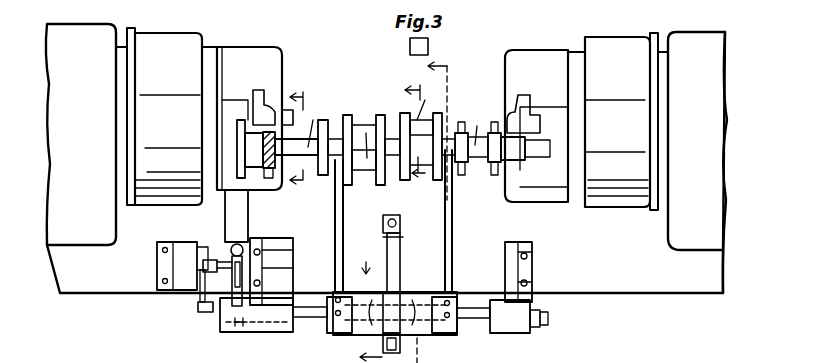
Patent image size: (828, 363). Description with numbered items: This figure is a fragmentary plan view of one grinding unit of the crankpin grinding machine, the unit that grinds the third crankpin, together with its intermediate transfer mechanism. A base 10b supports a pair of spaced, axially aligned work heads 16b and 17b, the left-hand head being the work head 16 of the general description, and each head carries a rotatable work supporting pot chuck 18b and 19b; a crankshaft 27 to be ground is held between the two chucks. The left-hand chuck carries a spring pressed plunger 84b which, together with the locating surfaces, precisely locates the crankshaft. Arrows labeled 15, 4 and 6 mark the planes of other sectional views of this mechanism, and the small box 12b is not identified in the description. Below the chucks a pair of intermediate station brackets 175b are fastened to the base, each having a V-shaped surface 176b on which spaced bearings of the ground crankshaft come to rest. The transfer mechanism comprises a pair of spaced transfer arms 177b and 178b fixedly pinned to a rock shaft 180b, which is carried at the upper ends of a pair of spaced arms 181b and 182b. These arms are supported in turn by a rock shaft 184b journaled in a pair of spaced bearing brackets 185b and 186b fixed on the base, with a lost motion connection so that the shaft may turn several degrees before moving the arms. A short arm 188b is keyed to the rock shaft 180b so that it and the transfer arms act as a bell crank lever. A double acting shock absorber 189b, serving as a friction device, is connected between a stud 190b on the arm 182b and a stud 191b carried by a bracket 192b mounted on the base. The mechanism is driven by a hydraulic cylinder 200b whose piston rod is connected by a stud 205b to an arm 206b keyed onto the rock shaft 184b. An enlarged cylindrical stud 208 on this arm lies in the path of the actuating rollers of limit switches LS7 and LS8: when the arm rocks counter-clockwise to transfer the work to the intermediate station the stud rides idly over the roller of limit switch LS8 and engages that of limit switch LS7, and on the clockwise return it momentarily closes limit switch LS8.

The base 10b is at (66, 267).
The work head 16b is at (76, 36).
The work head 17b is at (700, 36).
The pot chuck 18b is at (240, 52).
The pot chuck 19b is at (545, 57).
The crankshaft 27 is at (358, 113).
The spring pressed plunger 84b is at (287, 108).
The control unit 12b is at (410, 47).
The work head 16 is at (308, 138).
The section line 15 is at (419, 135).
The section line 4 is at (411, 212).
The section line 6 is at (366, 259).
The transfer arm 177b is at (344, 196).
The transfer arm 178b is at (453, 221).
The cylinder 200b is at (246, 215).
The stud 205b is at (224, 258).
The stud 208 is at (203, 262).
The limit switch LS8 is at (157, 251).
The limit switch LS7 is at (183, 278).
The arm 206b is at (224, 303).
The intermediate station bracket 175b is at (275, 253).
The V-shaped surface 176b is at (272, 276).
The bearing bracket 185b is at (274, 322).
The arm 181b is at (362, 320).
The rock shaft 180b is at (453, 265).
The rock shaft 184b is at (470, 307).
The arm 182b is at (428, 320).
The bearing bracket 186b is at (516, 330).
The bracket 192b is at (400, 226).
The double acting shock absorber 189b is at (400, 262).
The stud 191b is at (386, 240).
The stud 190b is at (418, 292).
The short arm 188b is at (372, 296).